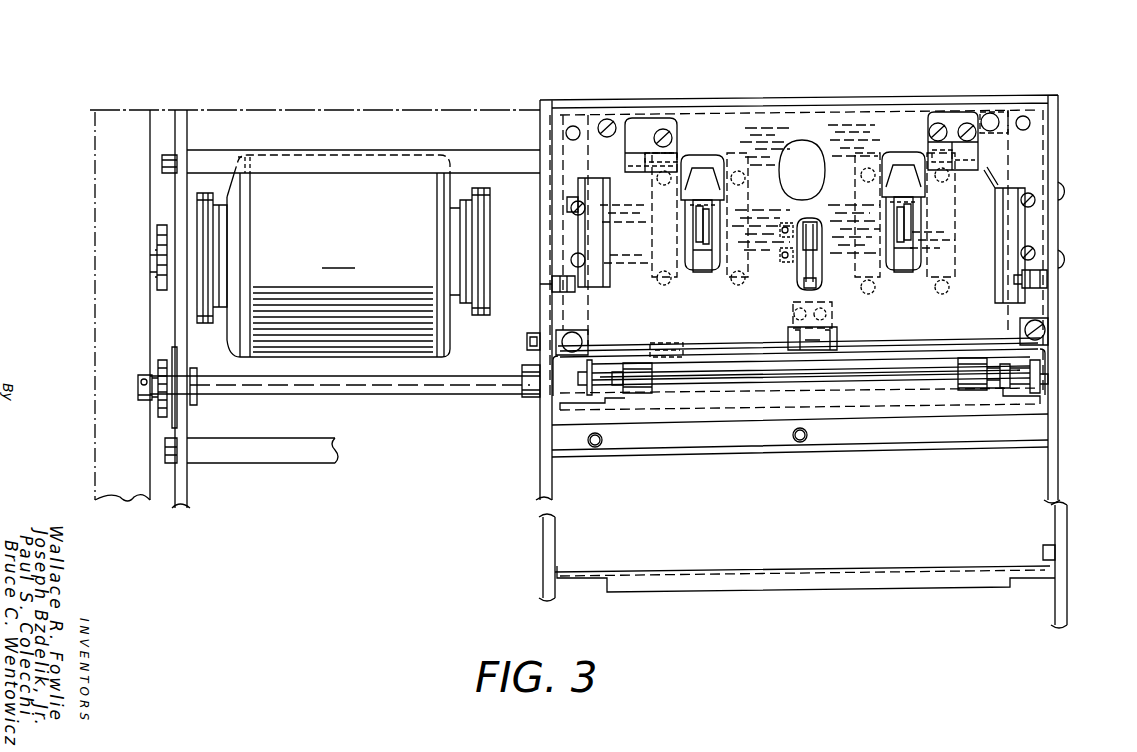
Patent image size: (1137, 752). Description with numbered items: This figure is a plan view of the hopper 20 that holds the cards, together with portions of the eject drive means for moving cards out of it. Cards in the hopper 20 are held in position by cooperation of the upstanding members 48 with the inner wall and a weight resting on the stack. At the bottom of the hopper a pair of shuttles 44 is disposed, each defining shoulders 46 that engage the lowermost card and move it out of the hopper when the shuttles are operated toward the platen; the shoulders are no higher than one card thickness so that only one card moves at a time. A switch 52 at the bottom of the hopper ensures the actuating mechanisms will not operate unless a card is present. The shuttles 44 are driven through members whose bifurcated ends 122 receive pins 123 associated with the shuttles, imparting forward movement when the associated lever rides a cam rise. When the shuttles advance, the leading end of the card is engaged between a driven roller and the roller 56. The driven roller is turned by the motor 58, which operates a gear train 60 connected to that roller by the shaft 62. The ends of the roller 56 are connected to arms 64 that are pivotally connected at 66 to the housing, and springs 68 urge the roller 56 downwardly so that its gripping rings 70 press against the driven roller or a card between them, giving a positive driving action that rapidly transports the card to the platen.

The hopper 20 is at (745, 122).
The shuttles 44 is at (688, 240).
The shoulders 46 is at (705, 150).
The upstanding members 48 is at (650, 118).
The switch 52 is at (797, 284).
The roller 56 is at (725, 385).
The motor 58 is at (343, 256).
The gear train 60 is at (150, 316).
The shaft 62 is at (388, 395).
The arms 64 is at (580, 380).
The pivotal connection 66 is at (585, 289).
The springs 68 is at (565, 335).
The gripping rings 70 is at (640, 395).
The bifurcated ends 122 is at (694, 216).
The pins 123 is at (697, 226).